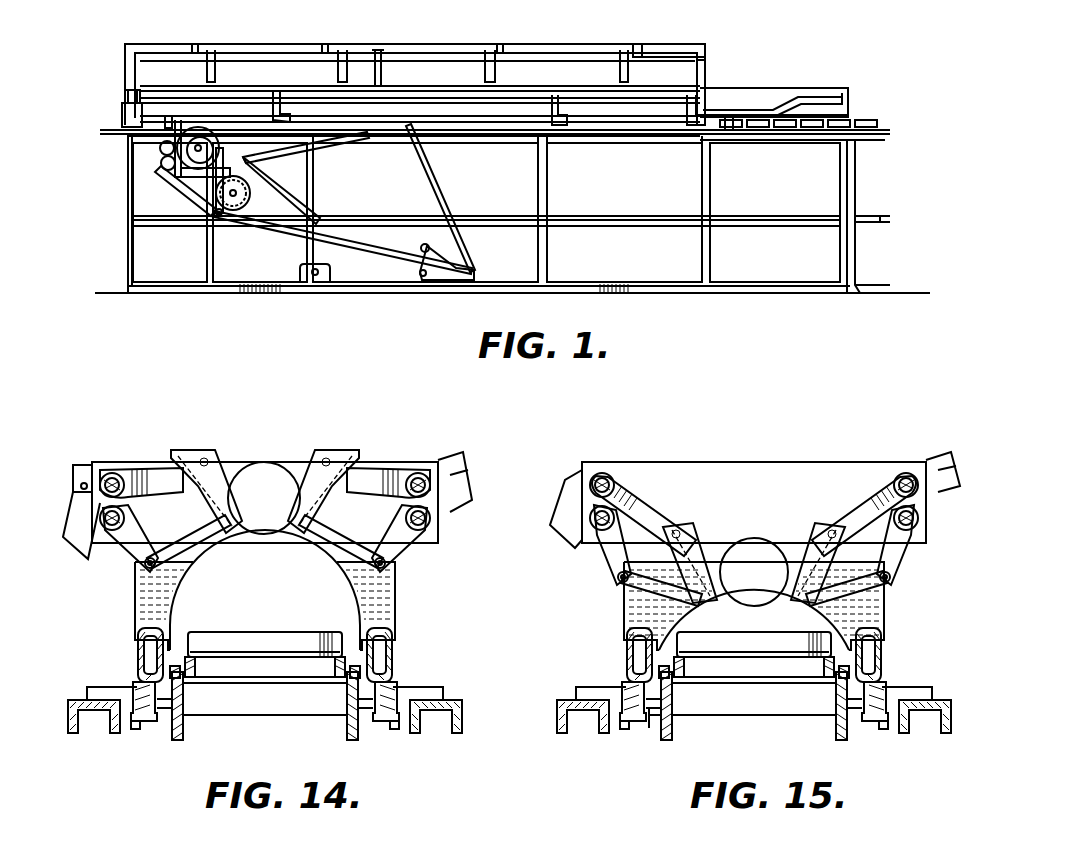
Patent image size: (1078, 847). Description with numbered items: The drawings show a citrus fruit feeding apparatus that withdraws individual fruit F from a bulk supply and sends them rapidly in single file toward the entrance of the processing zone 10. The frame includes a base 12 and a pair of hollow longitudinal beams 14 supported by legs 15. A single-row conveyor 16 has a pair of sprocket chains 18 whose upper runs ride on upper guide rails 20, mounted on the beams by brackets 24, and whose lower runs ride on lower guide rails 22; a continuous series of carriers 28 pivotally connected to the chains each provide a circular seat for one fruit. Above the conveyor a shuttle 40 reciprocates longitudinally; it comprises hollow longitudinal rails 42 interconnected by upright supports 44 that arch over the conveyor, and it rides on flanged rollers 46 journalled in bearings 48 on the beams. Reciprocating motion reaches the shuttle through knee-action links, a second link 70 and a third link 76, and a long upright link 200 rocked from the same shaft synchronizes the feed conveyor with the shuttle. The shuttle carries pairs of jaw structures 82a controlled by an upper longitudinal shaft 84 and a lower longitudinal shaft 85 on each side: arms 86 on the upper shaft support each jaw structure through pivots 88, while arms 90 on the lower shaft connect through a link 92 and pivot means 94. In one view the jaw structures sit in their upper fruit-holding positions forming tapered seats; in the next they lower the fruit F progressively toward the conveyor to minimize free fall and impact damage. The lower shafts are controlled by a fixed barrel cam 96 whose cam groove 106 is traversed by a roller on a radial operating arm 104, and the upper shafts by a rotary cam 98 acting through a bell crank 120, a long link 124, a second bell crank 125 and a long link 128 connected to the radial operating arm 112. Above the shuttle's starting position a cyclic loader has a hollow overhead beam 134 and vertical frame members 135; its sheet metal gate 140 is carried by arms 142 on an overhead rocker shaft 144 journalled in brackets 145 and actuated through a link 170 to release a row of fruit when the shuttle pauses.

In FIG. 1, the entrance of the processing zone 10 is at (888, 96).
In FIG. 1, the base 12 is at (620, 284).
In FIG. 1, the hollow longitudinal beams 14 is at (650, 135).
In FIG. 14, the hollow longitudinal beams 14 is at (72, 734).
In FIG. 15, the hollow longitudinal beams 14 is at (742, 734).
In FIG. 1, the legs 15 is at (130, 232).
In FIG. 1, the single-row conveyor 16 is at (180, 204).
In FIG. 14, the single-row conveyor 16 is at (317, 626).
In FIG. 15, the single-row conveyor 16 is at (809, 611).
In FIG. 1, the sprocket chains 18 is at (641, 218).
In FIG. 14, the sprocket chains 18 is at (312, 660).
In FIG. 15, the sprocket chains 18 is at (754, 668).
In FIG. 14, the upper guide rails 20 is at (184, 696).
In FIG. 15, the upper guide rails 20 is at (754, 723).
In FIG. 1, the lower guide rails 22 is at (748, 224).
In FIG. 15, the brackets 24 is at (753, 738).
In FIG. 14, the carriers 28 is at (278, 678).
In FIG. 15, the carriers 28 is at (754, 696).
In FIG. 1, the shuttle 40 is at (474, 124).
In FIG. 14, the shuttle 40 is at (296, 432).
In FIG. 15, the shuttle 40 is at (744, 440).
In FIG. 1, the hollow longitudinal rails 42 is at (602, 130).
In FIG. 14, the hollow longitudinal rails 42 is at (136, 660).
In FIG. 15, the hollow longitudinal rails 42 is at (755, 654).
In FIG. 1, the upright supports 44 is at (125, 118).
In FIG. 14, the upright supports 44 is at (398, 606).
In FIG. 15, the upright supports 44 is at (790, 462).
In FIG. 14, the flanged rollers 46 is at (146, 730).
In FIG. 15, the flanged rollers 46 is at (753, 725).
In FIG. 14, the bearings 48 is at (86, 686).
In FIG. 15, the bearings 48 is at (754, 675).
In FIG. 1, the second link 70 is at (304, 276).
In FIG. 1, the third link 76 is at (296, 158).
In FIG. 14, the jaw structure 82a is at (208, 440).
In FIG. 15, the jaw structure 82a is at (688, 516).
In FIG. 14, the upper longitudinal shaft 84 is at (108, 472).
In FIG. 15, the upper longitudinal shaft 84 is at (602, 472).
In FIG. 14, the lower longitudinal shaft 85 is at (108, 530).
In FIG. 15, the lower longitudinal shaft 85 is at (592, 528).
In FIG. 14, the arms 86 is at (152, 468).
In FIG. 15, the arms 86 is at (640, 498).
In FIG. 14, the pivots 88 is at (200, 498).
In FIG. 15, the pivots 88 is at (838, 520).
In FIG. 14, the arms 90 is at (130, 556).
In FIG. 15, the arms 90 is at (612, 560).
In FIG. 14, the link 92 is at (205, 538).
In FIG. 15, the link 92 is at (630, 590).
In FIG. 14, the pivot means 94 is at (284, 538).
In FIG. 15, the pivot means 94 is at (698, 598).
In FIG. 1, the barrel cam 96 is at (740, 92).
In FIG. 1, the rotary cam 98 is at (175, 190).
In FIG. 14, the radial operating arm 104 is at (70, 530).
In FIG. 15, the radial operating arm 104 is at (556, 518).
In FIG. 1, the cam groove 106 is at (796, 100).
In FIG. 14, the radial operating arm 112 is at (450, 472).
In FIG. 15, the radial operating arm 112 is at (936, 460).
In FIG. 1, the bell crank 120 is at (203, 222).
In FIG. 1, the long link 124 is at (258, 226).
In FIG. 1, the second bell crank 125 is at (452, 282).
In FIG. 1, the long link 128 is at (434, 189).
In FIG. 1, the hollow overhead beam 134 is at (163, 46).
In FIG. 1, the vertical frame members 135 is at (708, 62).
In FIG. 1, the sheet metal gate 140 is at (250, 68).
In FIG. 1, the arms 142 is at (214, 58).
In FIG. 1, the overhead rocker shaft 144 is at (300, 48).
In FIG. 1, the brackets 145 is at (342, 50).
In FIG. 1, the link 170 is at (380, 66).
In FIG. 1, the long upright link 200 is at (315, 187).
In FIG. 14, the fruit F is at (262, 462).
In FIG. 15, the fruit F is at (752, 502).